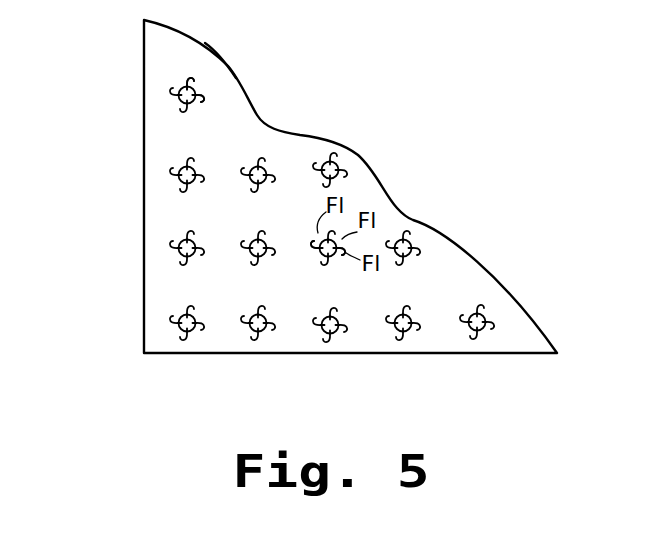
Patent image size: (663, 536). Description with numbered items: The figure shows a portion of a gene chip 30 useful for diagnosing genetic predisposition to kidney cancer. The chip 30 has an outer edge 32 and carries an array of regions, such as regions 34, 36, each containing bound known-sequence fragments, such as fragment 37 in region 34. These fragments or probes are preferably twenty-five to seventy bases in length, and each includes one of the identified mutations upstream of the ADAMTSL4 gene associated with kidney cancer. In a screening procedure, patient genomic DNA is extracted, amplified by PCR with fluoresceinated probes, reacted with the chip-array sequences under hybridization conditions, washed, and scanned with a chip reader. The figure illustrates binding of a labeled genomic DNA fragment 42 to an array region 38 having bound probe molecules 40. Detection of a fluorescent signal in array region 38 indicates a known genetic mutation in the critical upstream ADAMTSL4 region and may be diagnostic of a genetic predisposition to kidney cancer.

The gene chip 30 is at (278, 124).
The edge of surface 32 is at (230, 70).
The region 34 is at (181, 99).
The region 36 is at (176, 181).
The fragment 37 is at (194, 85).
The array region 38 is at (328, 258).
The probe molecules 40 is at (316, 248).
The labeled genomic DNA fragment 42 is at (348, 260).